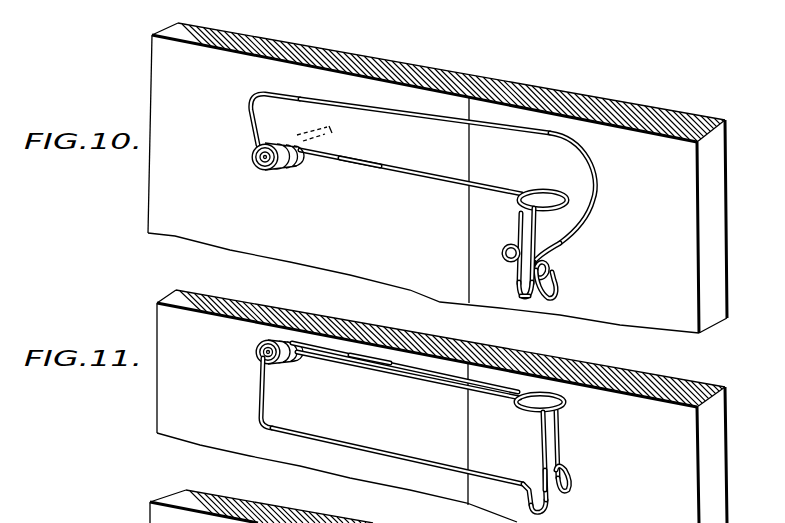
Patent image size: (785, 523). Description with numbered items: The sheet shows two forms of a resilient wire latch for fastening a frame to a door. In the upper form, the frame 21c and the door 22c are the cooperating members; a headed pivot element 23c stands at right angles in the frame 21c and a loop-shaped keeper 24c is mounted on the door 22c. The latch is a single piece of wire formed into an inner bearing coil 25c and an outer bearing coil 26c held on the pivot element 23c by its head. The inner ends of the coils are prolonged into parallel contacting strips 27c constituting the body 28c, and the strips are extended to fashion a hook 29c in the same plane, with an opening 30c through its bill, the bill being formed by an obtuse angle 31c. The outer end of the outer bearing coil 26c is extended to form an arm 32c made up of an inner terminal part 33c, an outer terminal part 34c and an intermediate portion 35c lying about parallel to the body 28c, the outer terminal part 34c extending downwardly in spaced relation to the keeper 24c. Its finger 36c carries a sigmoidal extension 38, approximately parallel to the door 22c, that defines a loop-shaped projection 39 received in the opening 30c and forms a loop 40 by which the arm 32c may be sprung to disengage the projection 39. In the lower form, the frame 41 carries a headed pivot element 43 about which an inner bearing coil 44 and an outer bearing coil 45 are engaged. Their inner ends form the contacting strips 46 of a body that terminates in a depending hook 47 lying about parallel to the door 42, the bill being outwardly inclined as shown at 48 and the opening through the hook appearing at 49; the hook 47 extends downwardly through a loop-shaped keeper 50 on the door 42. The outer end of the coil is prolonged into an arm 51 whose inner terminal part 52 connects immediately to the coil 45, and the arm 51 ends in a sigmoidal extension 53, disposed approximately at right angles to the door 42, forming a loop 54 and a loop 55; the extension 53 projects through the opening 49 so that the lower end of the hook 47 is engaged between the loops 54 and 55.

In FIG. 10, the frame 21c is at (154, 194).
In FIG. 10, the door 22c is at (717, 263).
In FIG. 10, the pivot element 23c is at (260, 160).
In FIG. 10, the keeper 24c is at (520, 199).
In FIG. 10, the inner bearing coil 25c is at (296, 141).
In FIG. 10, the outer bearing coil 26c is at (276, 168).
In FIG. 10, the contacting strips 27c is at (363, 158).
In FIG. 10, the body 28c is at (421, 170).
In FIG. 10, the hook 29c is at (528, 226).
In FIG. 10, the opening 30c is at (523, 299).
In FIG. 10, the angle 31c is at (516, 283).
In FIG. 10, the arm 32c is at (504, 122).
In FIG. 10, the inner terminal part 33c is at (252, 126).
In FIG. 10, the outer terminal part 34c is at (594, 179).
In FIG. 10, the intermediate portion 35c is at (404, 98).
In FIG. 10, the finger 36c is at (556, 243).
In FIG. 10, the sigmoidal extension 38 is at (550, 261).
In FIG. 10, the loop-shaped projection 39 is at (505, 254).
In FIG. 10, the loop 40 is at (556, 291).
In FIG. 11, the frame 41 is at (161, 401).
In FIG. 11, the door 42 is at (717, 503).
In FIG. 11, the pivot element 43 is at (257, 357).
In FIG. 11, the inner bearing coil 44 is at (287, 349).
In FIG. 11, the outer bearing coil 45 is at (276, 364).
In FIG. 11, the contacting strips 46 is at (432, 367).
In FIG. 11, the hook 47 is at (367, 358).
In FIG. 11, the bill of the hook 48 is at (543, 471).
In FIG. 11, the opening 49 is at (546, 447).
In FIG. 11, the keeper 50 is at (566, 399).
In FIG. 11, the arm 51 is at (418, 448).
In FIG. 11, the inner terminal part 52 is at (259, 392).
In FIG. 11, the sigmoidal extension 53 is at (547, 509).
In FIG. 11, the loop 54 is at (527, 505).
In FIG. 11, the loop 55 is at (567, 487).